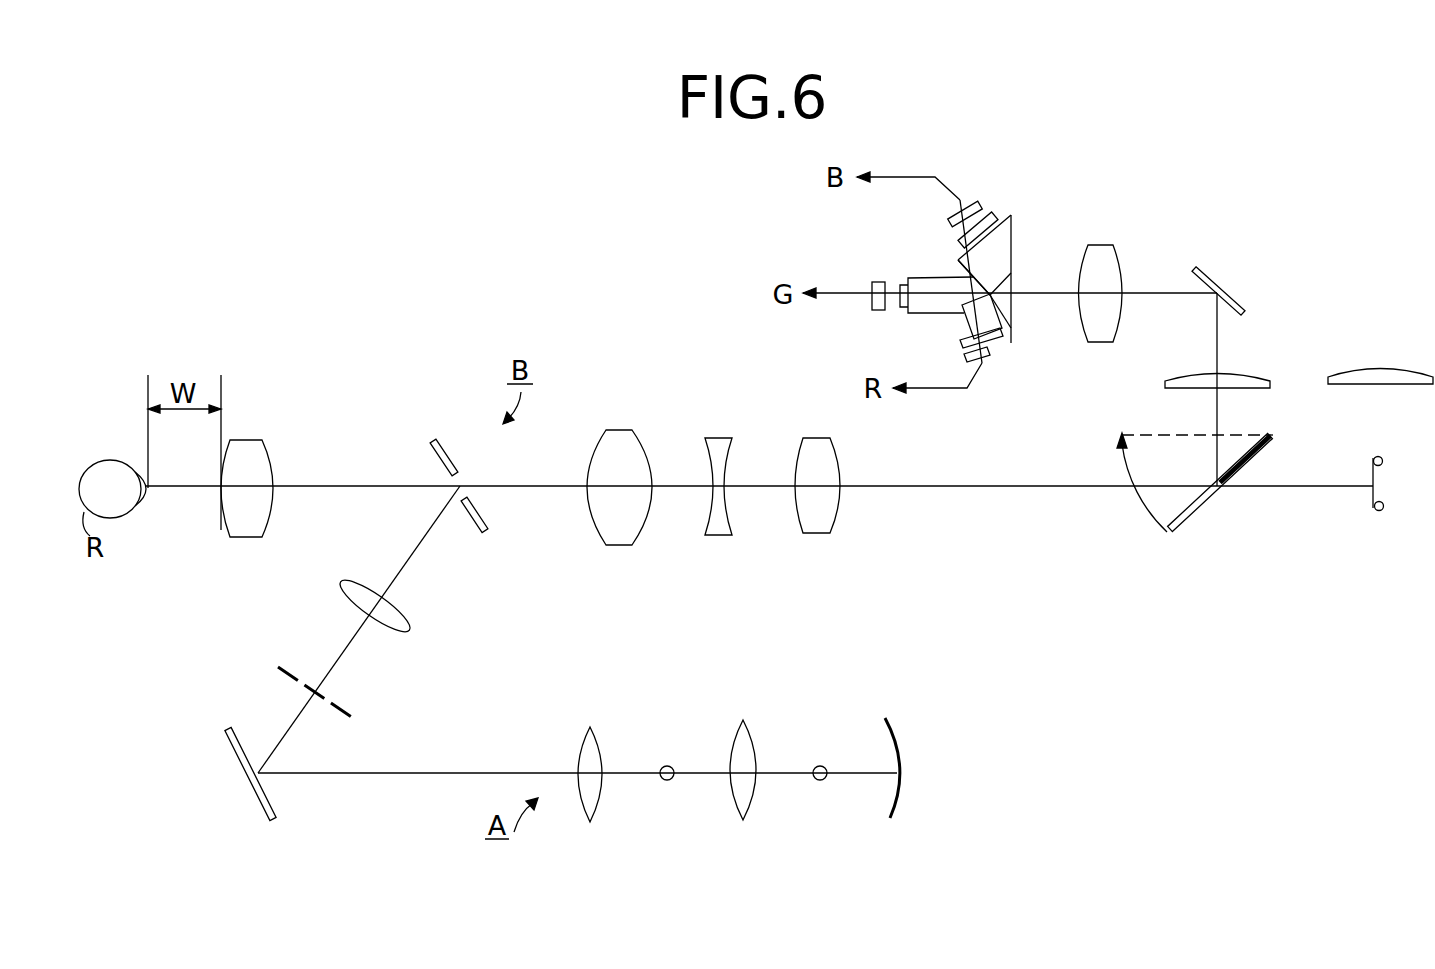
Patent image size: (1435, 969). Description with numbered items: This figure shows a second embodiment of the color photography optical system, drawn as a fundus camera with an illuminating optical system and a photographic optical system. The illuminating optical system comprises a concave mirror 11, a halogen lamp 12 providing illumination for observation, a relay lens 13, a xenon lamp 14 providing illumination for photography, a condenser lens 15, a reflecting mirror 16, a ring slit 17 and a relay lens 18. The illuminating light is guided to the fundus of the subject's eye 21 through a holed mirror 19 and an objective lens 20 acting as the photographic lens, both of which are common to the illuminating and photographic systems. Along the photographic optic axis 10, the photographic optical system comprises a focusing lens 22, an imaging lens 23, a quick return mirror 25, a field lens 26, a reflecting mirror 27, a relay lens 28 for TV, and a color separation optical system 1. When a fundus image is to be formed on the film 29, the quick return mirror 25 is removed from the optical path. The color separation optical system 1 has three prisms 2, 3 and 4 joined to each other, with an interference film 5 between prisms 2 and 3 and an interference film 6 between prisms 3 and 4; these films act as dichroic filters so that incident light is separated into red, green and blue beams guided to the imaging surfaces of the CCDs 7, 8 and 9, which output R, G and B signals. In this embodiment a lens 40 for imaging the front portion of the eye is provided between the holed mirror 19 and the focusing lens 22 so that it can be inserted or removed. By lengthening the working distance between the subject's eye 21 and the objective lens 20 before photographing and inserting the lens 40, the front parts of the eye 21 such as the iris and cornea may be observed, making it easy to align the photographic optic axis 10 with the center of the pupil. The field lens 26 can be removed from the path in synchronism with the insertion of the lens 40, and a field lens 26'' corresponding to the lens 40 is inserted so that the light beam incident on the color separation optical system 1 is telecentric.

The color separation optical system 1 is at (987, 283).
The prism 2 is at (933, 306).
The prism 3 is at (1008, 333).
The prism 4 is at (1008, 238).
The interference film 5 is at (968, 300).
The interference film 6 is at (1013, 318).
The CCD 7 is at (985, 356).
The CCD 8 is at (870, 306).
The CCD 9 is at (960, 204).
The photographic optic axis 10 is at (945, 488).
The concave mirror 11 is at (898, 735).
The halogen lamp 12 is at (822, 780).
The relay lens 13 is at (751, 800).
The xenon lamp 14 is at (670, 780).
The condenser lens 15 is at (598, 804).
The reflecting mirror 16 is at (258, 800).
The ring slit 17 is at (280, 668).
The relay lens 18 is at (412, 630).
The holed mirror 19 is at (442, 438).
The objective lens 20 is at (250, 440).
The subject's eye 21 is at (118, 462).
The focusing lens 22 is at (718, 535).
The imaging lens 23 is at (816, 533).
The quick return mirror 25 is at (1189, 512).
The field lens 26 is at (1380, 356).
The field lens 26'' is at (1232, 358).
The reflecting mirror 27 is at (1206, 270).
The relay lens for TV 28 is at (1100, 245).
The film 29 is at (1382, 463).
The lens for imaging the front portion of the eye 40 is at (618, 430).